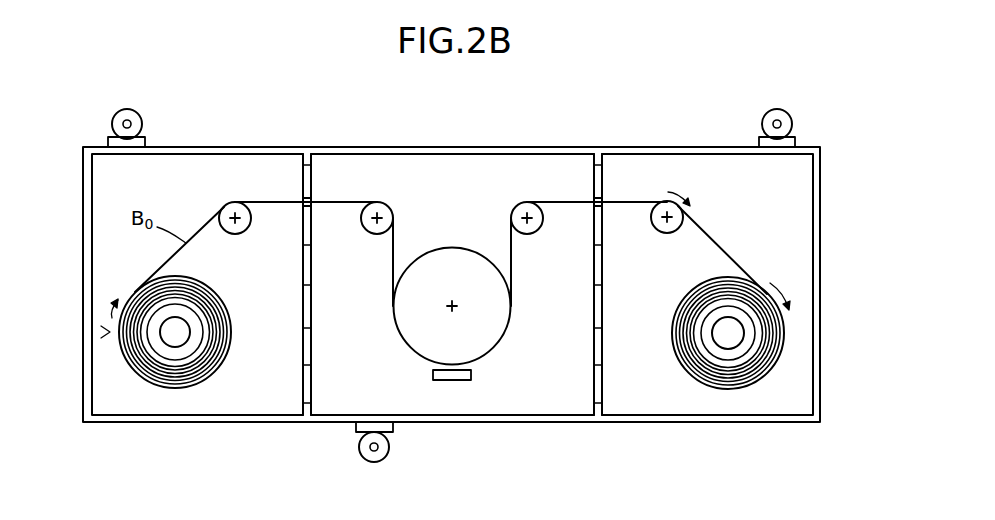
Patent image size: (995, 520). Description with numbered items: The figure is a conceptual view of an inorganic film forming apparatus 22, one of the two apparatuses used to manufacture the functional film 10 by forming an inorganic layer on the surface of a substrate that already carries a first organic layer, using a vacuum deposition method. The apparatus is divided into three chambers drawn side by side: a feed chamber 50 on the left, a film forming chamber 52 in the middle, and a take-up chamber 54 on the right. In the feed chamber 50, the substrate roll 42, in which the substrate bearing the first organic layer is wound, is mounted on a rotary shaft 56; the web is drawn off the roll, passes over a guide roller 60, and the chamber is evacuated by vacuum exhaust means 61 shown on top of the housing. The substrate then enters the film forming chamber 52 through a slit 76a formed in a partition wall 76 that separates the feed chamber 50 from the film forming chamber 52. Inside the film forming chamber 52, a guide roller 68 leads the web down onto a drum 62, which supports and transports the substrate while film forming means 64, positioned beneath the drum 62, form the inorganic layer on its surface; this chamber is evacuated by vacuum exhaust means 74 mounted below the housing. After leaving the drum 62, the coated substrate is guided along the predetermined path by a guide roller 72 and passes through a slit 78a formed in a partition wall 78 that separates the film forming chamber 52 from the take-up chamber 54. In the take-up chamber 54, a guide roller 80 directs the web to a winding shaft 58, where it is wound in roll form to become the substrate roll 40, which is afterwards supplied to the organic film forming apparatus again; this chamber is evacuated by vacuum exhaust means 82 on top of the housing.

The functional film 10 is at (722, 246).
The inorganic film forming apparatus 22 is at (699, 107).
The substrate roll 40 is at (735, 389).
The substrate roll 42 is at (190, 386).
The feed chamber 50 is at (252, 146).
The film forming chamber 52 is at (415, 146).
The take-up chamber 54 is at (821, 178).
The rotary shaft 56 is at (168, 338).
The winding shaft 58 is at (733, 333).
The guide roller 60 is at (240, 233).
The vacuum exhaust means 61 is at (143, 118).
The drum 62 is at (454, 255).
The film forming means 64 is at (466, 375).
The guide roller 68 is at (361, 221).
The guide roller 72 is at (543, 219).
The vacuum exhaust means 74 is at (357, 444).
The partition wall 76 is at (302, 300).
The slit 76a is at (312, 196).
The partition wall 78 is at (603, 350).
The slit 78a is at (603, 196).
The guide roller 80 is at (665, 234).
The vacuum exhaust means 82 is at (781, 108).